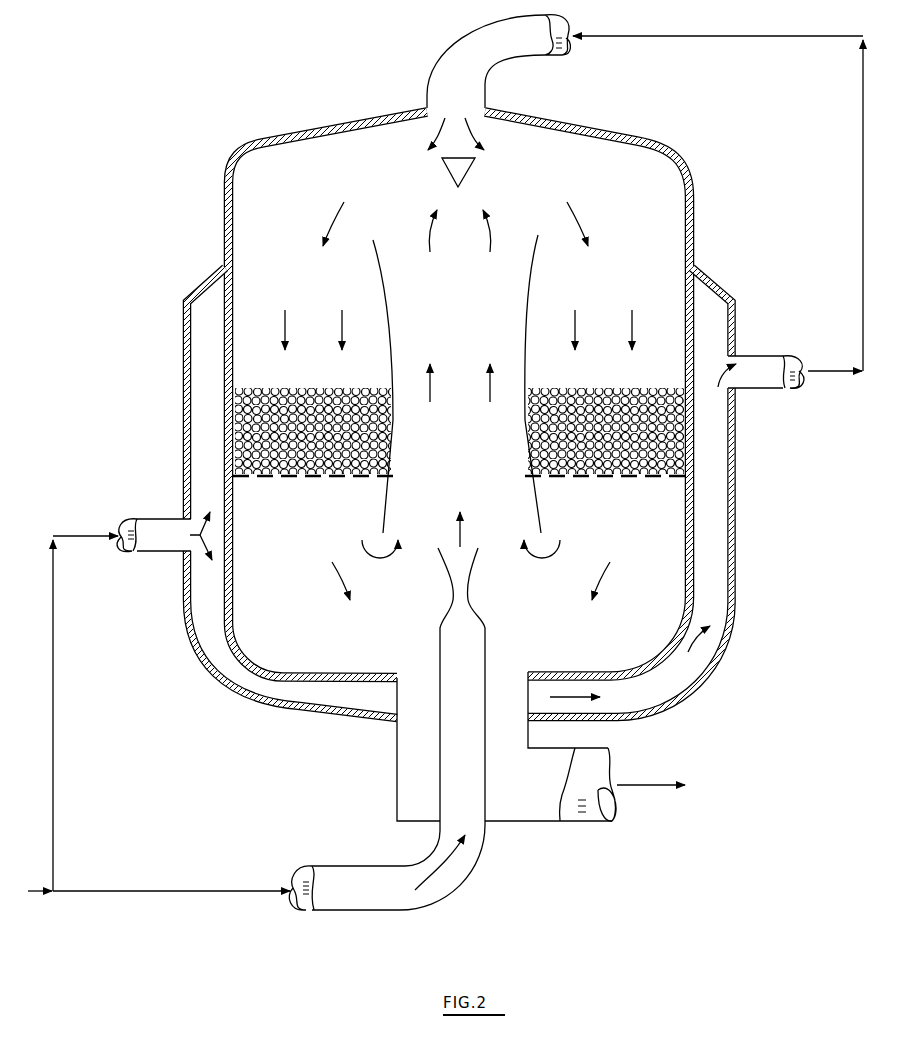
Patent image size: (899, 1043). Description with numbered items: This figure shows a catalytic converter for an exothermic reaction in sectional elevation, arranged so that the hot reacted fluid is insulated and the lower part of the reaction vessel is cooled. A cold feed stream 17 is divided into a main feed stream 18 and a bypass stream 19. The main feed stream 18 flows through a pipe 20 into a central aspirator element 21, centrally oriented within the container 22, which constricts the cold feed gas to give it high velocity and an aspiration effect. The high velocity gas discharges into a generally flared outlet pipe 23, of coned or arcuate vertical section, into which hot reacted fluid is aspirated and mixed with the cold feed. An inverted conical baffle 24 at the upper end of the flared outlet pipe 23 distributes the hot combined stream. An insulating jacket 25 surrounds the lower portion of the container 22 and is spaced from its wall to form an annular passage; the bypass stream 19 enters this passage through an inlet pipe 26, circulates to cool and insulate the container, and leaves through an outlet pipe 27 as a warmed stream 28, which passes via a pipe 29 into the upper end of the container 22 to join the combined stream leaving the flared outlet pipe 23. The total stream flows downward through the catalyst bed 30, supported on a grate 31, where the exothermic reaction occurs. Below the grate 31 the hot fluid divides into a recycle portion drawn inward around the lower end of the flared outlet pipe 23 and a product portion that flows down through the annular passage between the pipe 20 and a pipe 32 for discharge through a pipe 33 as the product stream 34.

The cold feed stream 17 is at (32, 894).
The main feed stream 18 is at (147, 894).
The bypass stream 19 is at (56, 713).
The pipe 20 is at (346, 913).
The central aspirator element 21 is at (474, 583).
The container 22 is at (224, 216).
The flared outlet pipe 23 is at (381, 281).
The inverted conical baffle 24 is at (464, 173).
The insulating jacket 25 is at (182, 432).
The inlet pipe 26 is at (125, 554).
The outlet pipe 27 is at (786, 392).
The stream 28 is at (690, 36).
The pipe 29 is at (553, 58).
The catalyst bed 30 is at (290, 386).
The grate 31 is at (293, 479).
The pipe 32 is at (534, 732).
The pipe 33 is at (574, 824).
The stream 34 is at (622, 783).